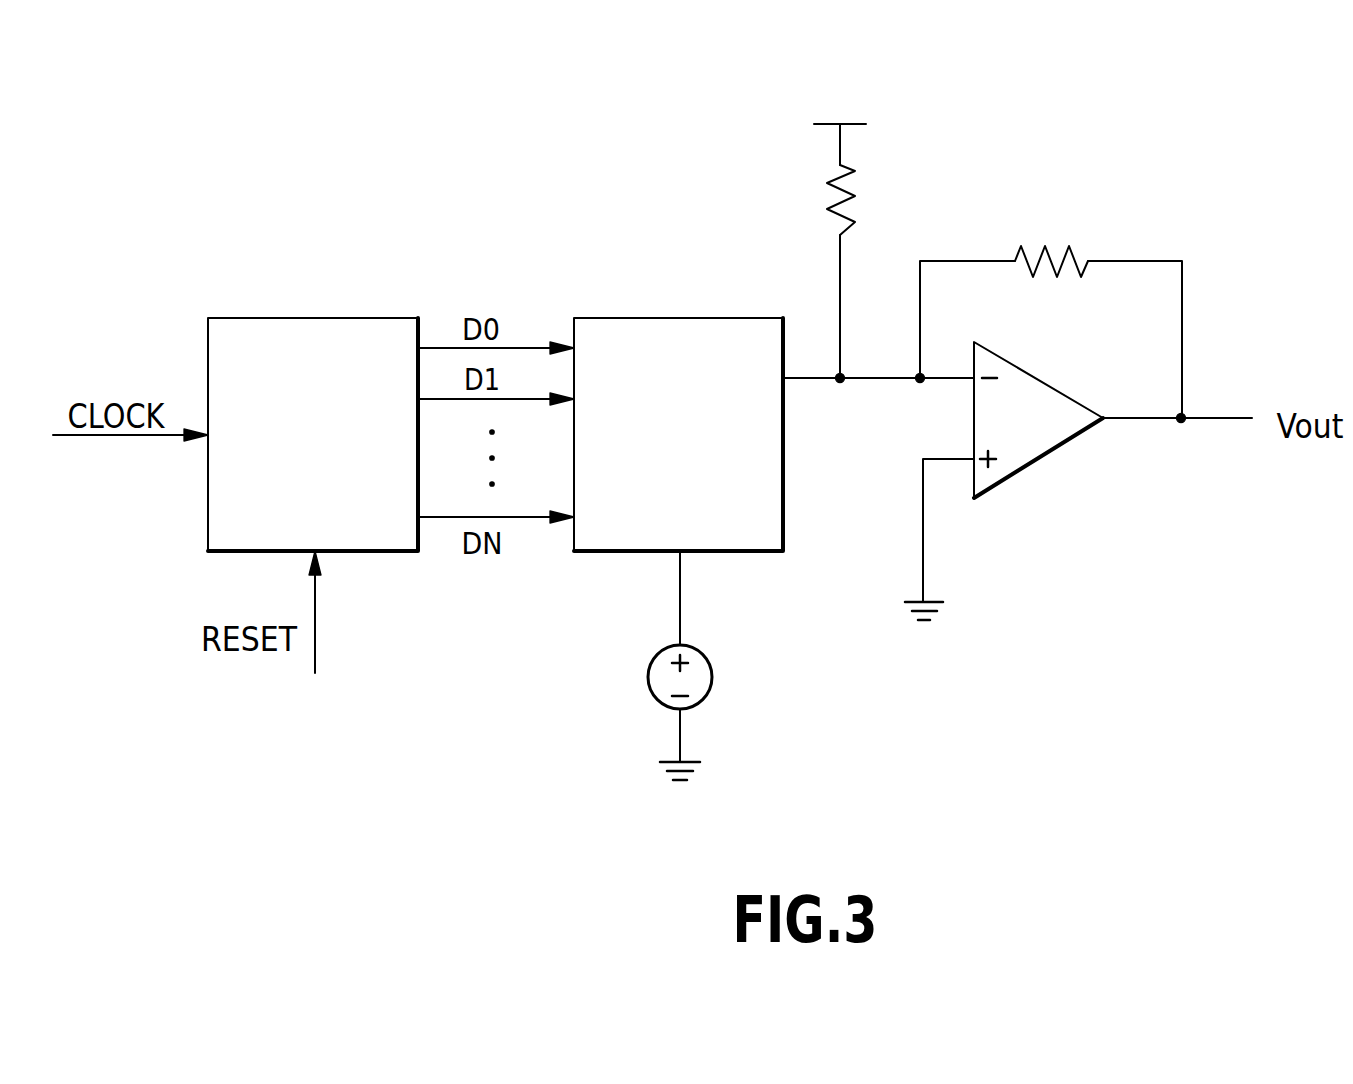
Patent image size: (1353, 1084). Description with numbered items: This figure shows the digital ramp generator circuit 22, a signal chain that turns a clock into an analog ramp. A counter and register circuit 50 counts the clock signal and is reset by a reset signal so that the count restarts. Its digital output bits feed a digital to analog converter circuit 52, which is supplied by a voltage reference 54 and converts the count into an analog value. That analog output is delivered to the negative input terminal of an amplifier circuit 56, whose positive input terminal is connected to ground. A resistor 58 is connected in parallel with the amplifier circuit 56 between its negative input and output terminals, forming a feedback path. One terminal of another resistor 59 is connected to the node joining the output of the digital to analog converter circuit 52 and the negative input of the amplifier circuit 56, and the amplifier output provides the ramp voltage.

The digital ramp generator circuit 22 is at (1212, 148).
The counter and register circuit 50 is at (317, 318).
The digital to analog converter circuit 52 is at (684, 318).
The voltage reference 54 is at (651, 664).
The amplifier circuit 56 is at (1035, 462).
The resistor 58 is at (1052, 252).
The resistor 59 is at (834, 200).